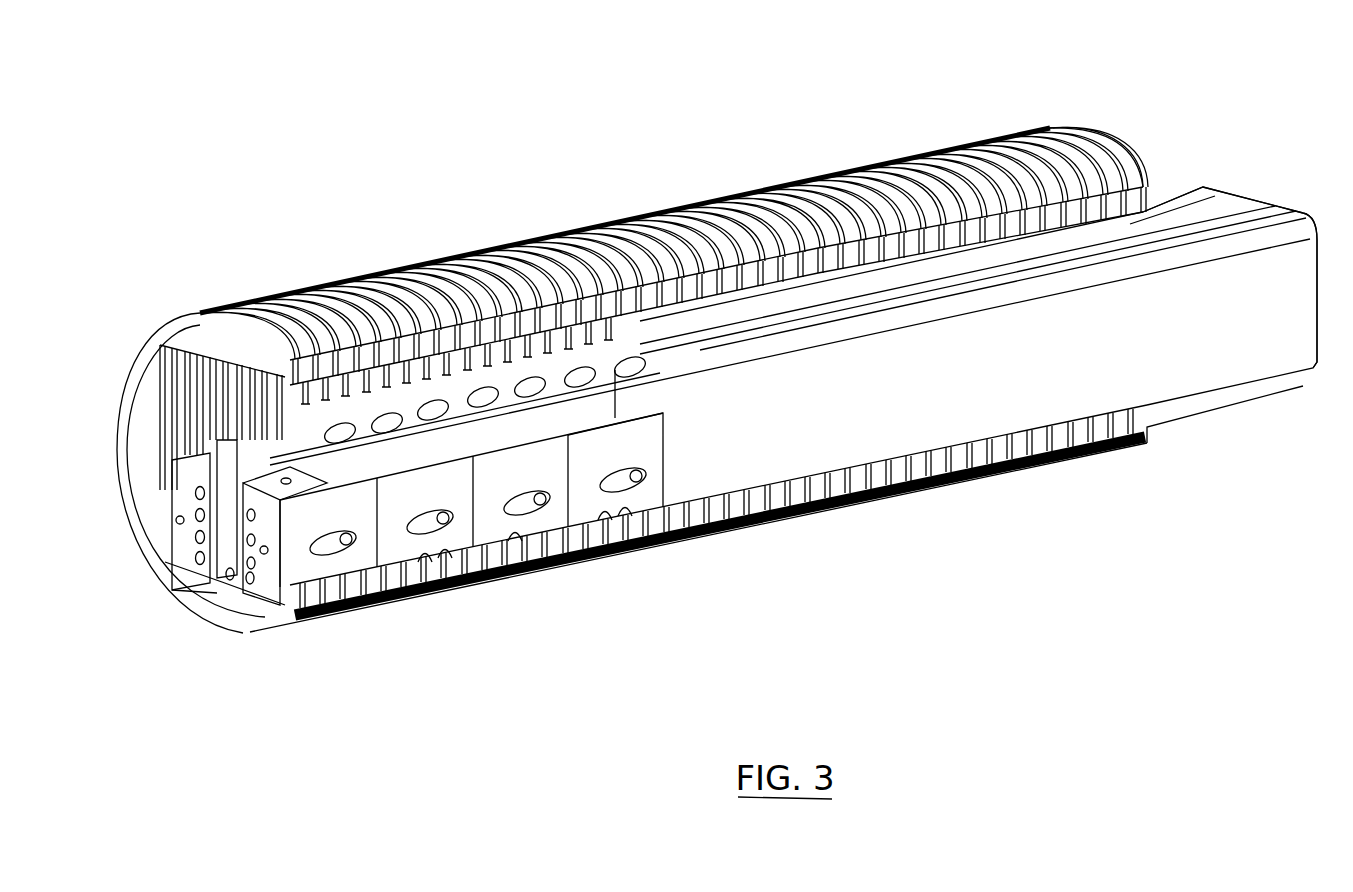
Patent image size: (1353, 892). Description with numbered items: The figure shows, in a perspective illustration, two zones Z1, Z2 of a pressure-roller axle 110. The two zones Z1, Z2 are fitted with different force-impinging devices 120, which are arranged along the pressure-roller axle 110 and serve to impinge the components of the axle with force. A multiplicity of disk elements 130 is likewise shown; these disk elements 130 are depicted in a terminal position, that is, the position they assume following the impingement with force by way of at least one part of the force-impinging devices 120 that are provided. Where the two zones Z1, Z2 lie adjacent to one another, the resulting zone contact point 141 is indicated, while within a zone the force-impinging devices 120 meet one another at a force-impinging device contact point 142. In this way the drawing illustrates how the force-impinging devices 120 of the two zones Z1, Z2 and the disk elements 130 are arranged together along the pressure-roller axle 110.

The pressure-roller axle 110 is at (397, 210).
The force-impinging devices 120 is at (1132, 228).
The disk elements 130 is at (203, 620).
The zone contact point 141 is at (663, 443).
The force-impinging device contact point 142 is at (513, 580).
The zone Z1 is at (257, 670).
The zone Z2 is at (1032, 512).